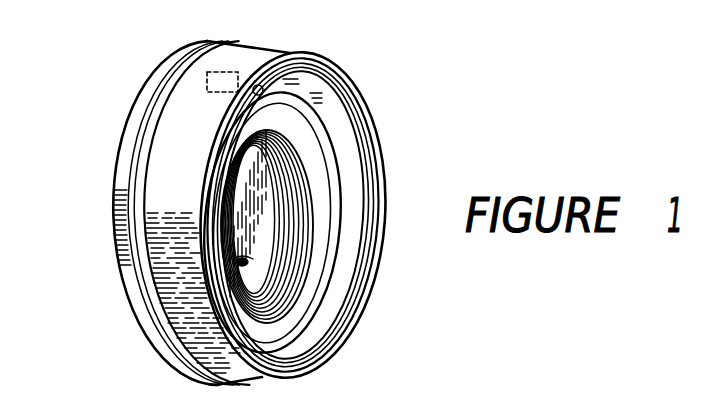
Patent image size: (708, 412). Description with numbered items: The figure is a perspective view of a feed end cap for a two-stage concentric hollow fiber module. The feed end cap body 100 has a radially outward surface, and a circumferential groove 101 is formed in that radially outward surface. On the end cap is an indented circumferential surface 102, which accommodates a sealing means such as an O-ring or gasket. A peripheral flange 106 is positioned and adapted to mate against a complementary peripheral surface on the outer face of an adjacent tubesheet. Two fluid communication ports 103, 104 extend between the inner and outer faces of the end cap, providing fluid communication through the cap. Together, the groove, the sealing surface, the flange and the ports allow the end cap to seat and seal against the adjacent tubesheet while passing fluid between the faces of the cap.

The feed end cap body 100 is at (193, 108).
The circumferential groove 101 is at (132, 250).
The indented circumferential surface 102 is at (352, 127).
The fluid communication port 103 is at (287, 82).
The fluid communication port 104 is at (247, 273).
The peripheral flange 106 is at (317, 89).